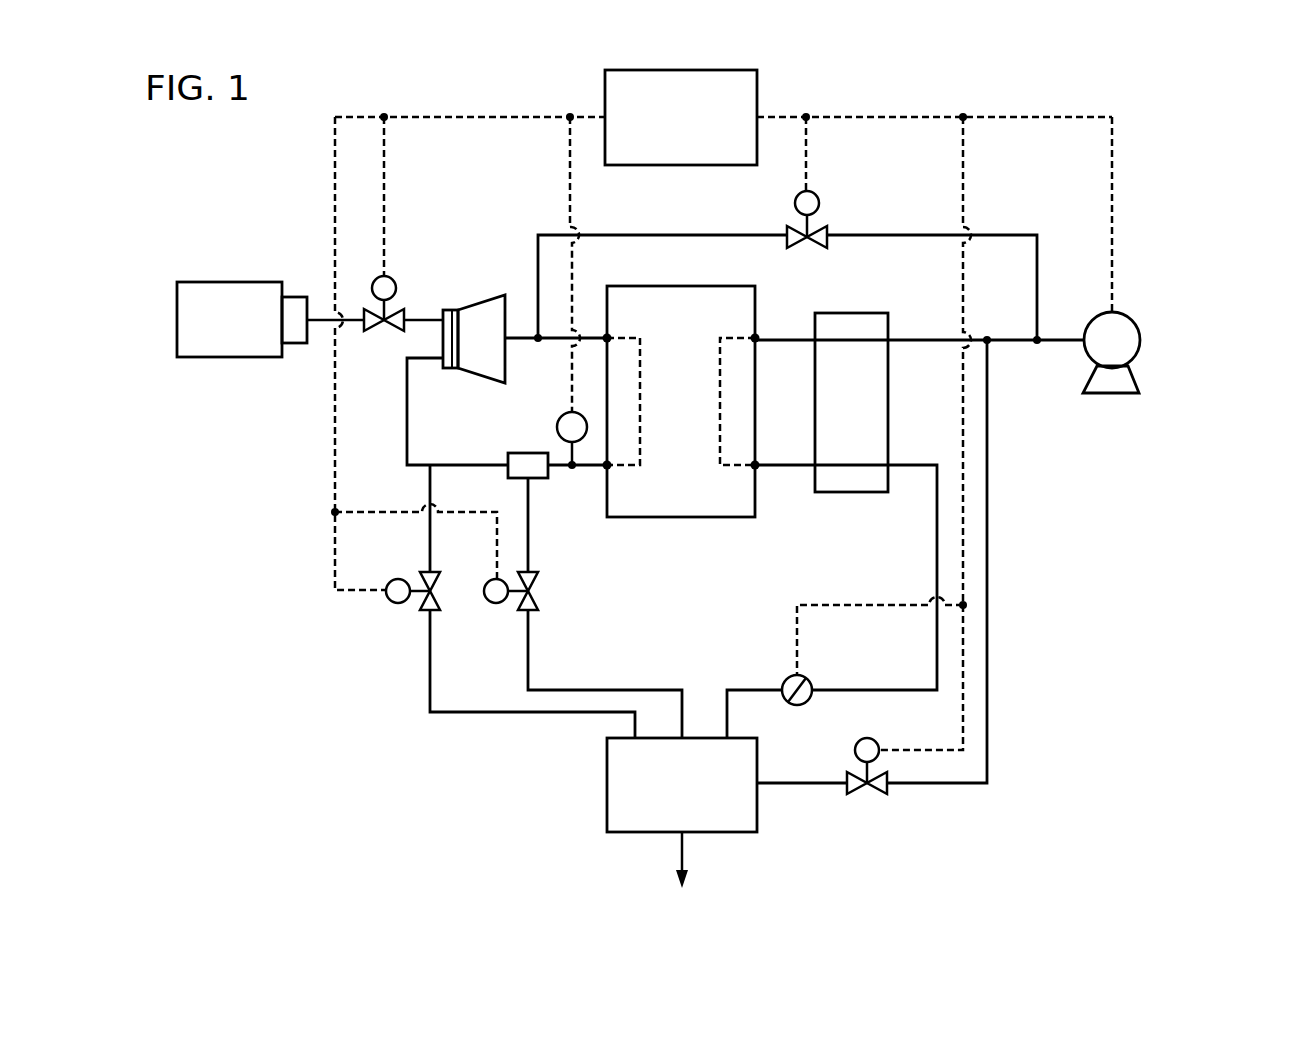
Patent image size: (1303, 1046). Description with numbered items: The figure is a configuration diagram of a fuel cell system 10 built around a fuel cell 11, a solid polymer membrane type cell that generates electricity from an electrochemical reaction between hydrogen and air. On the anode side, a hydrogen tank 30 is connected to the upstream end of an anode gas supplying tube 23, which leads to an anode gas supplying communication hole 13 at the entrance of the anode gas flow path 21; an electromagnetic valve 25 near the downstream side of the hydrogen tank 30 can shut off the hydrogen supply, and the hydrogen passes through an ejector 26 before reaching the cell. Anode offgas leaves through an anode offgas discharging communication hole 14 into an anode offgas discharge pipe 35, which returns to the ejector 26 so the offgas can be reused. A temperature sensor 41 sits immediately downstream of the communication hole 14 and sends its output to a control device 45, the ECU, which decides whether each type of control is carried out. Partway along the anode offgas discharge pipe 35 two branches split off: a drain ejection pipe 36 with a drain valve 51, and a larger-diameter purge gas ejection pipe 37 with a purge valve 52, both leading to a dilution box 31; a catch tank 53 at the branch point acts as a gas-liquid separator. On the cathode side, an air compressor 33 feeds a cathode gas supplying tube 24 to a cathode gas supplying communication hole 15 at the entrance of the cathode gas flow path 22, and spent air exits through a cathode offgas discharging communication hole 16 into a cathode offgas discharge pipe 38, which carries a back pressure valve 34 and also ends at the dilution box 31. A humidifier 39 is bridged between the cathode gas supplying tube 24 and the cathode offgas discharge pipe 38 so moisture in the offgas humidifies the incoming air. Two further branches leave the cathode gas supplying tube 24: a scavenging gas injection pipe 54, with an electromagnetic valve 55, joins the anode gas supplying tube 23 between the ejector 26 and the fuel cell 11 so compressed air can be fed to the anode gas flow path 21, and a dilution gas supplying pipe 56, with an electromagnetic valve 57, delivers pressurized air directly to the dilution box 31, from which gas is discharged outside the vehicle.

The fuel cell system 10 is at (1172, 122).
The fuel cell 11 is at (686, 518).
The anode gas supplying communication hole 13 is at (606, 337).
The anode offgas discharging communication hole 14 is at (605, 467).
The cathode gas supplying communication hole 15 is at (753, 337).
The cathode offgas discharging communication hole 16 is at (757, 467).
The anode gas flow path 21 is at (648, 440).
The cathode gas flow path 22 is at (712, 440).
The anode gas supplying tube 23 is at (525, 338).
The cathode gas supplying tube 24 is at (786, 338).
The electromagnetic valve 25 is at (393, 278).
The ejector 26 is at (480, 300).
The hydrogen tank 30 is at (227, 280).
The dilution box 31 is at (605, 784).
The air compressor 33 is at (1143, 340).
The back pressure valve 34 is at (790, 680).
The anode offgas discharge pipe 35 is at (468, 463).
The drain ejection pipe 36 is at (531, 548).
The purge gas ejection pipe 37 is at (430, 668).
The cathode offgas discharge pipe 38 is at (782, 448).
The humidifier 39 is at (850, 493).
The temperature sensor 41 is at (560, 413).
The control device (ECU) 45 is at (758, 97).
The drain valve 51 is at (492, 605).
The purge valve 52 is at (393, 578).
The catch tank 53 is at (528, 452).
The scavenging gas injection pipe 54 is at (892, 233).
The electromagnetic valve 55 is at (815, 192).
The dilution gas supplying pipe 56 is at (988, 697).
The electromagnetic valve 57 is at (853, 750).